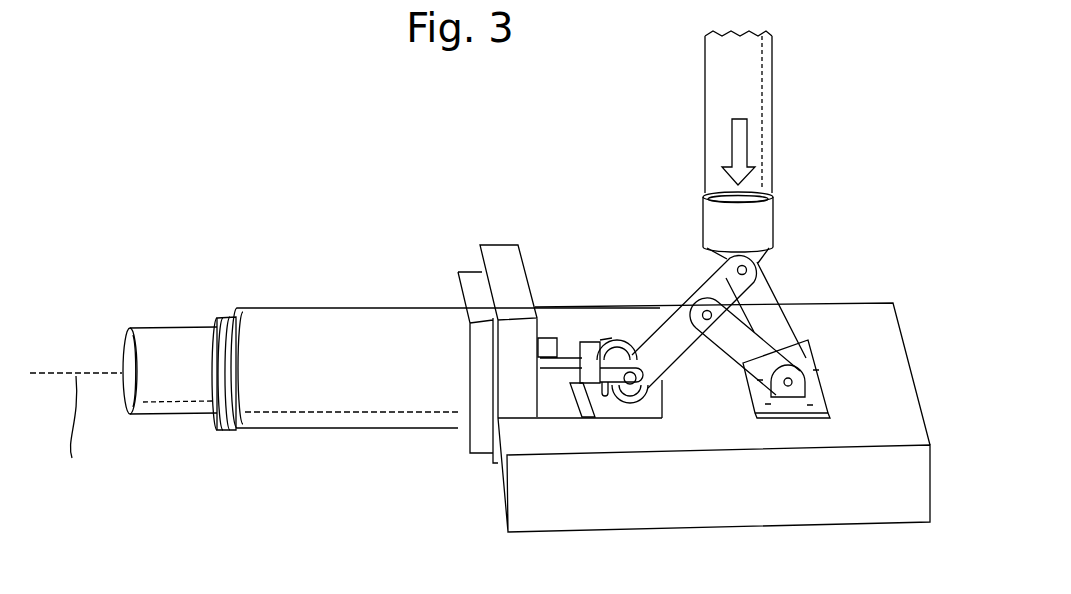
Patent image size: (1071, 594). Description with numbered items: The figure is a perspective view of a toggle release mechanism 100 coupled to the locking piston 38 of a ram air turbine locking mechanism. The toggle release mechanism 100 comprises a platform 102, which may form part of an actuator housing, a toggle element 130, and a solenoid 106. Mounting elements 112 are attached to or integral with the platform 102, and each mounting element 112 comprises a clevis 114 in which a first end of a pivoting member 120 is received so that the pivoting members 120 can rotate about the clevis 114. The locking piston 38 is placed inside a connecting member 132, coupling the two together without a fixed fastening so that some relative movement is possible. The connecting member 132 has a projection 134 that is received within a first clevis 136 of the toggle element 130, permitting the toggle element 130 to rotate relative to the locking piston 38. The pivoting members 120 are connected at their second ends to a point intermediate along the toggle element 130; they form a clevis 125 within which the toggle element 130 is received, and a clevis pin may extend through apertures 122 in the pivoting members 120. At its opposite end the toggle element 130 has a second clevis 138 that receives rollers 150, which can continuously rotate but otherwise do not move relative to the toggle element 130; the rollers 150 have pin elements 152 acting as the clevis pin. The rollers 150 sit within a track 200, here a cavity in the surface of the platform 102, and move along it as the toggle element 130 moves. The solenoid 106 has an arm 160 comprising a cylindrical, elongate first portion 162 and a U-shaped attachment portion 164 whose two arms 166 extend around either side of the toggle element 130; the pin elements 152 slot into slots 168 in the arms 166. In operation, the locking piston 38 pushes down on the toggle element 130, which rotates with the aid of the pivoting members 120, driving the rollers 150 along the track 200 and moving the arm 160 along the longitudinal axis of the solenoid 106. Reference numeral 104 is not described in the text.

The locking piston 38 is at (718, 78).
The toggle release mechanism 100 is at (325, 540).
The platform 102 is at (520, 506).
The mounting surface of base 104 is at (732, 422).
The solenoid 106 is at (272, 330).
The mounting element 112 is at (815, 362).
The clevis 114 is at (806, 345).
The pivoting member 120 is at (772, 290).
The aperture 122 is at (707, 321).
The clevis 125 is at (672, 280).
The toggle element 130 is at (642, 305).
The connecting member 132 is at (708, 215).
The projection 134 is at (753, 247).
The first clevis 136 is at (702, 249).
The second clevis 138 is at (640, 352).
The roller 150 is at (602, 342).
The pin element 152 is at (632, 392).
The arm 160 is at (595, 380).
The first portion 162 is at (550, 360).
The attachment portion 164 is at (604, 385).
The arm 166 is at (617, 392).
The slot 168 is at (640, 388).
The track 200 is at (624, 422).